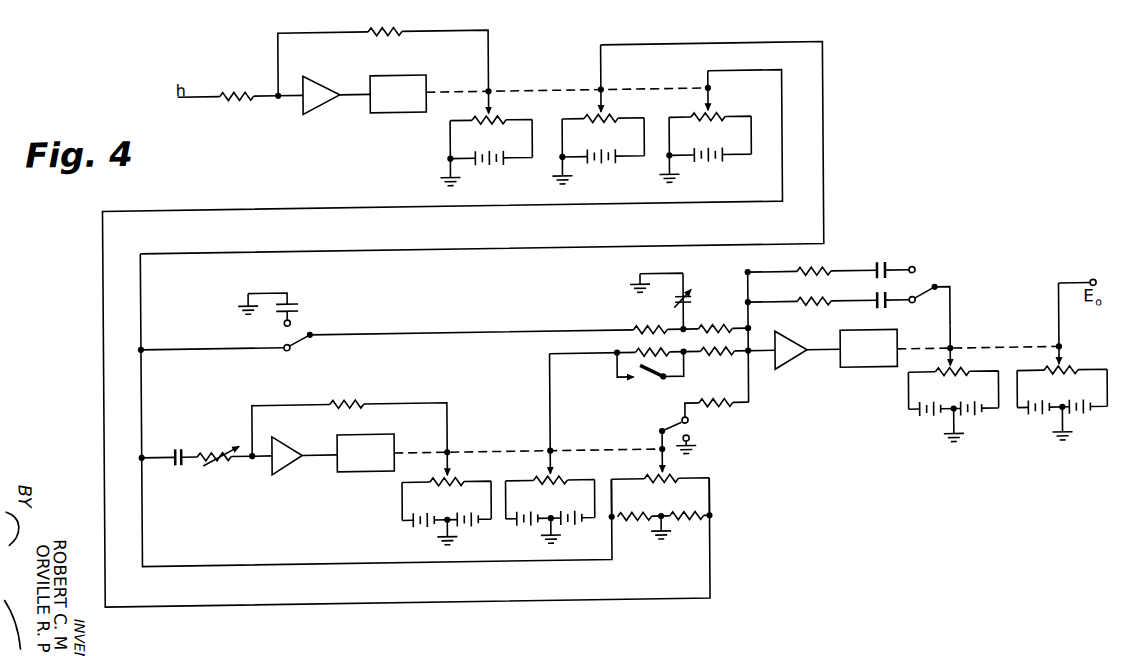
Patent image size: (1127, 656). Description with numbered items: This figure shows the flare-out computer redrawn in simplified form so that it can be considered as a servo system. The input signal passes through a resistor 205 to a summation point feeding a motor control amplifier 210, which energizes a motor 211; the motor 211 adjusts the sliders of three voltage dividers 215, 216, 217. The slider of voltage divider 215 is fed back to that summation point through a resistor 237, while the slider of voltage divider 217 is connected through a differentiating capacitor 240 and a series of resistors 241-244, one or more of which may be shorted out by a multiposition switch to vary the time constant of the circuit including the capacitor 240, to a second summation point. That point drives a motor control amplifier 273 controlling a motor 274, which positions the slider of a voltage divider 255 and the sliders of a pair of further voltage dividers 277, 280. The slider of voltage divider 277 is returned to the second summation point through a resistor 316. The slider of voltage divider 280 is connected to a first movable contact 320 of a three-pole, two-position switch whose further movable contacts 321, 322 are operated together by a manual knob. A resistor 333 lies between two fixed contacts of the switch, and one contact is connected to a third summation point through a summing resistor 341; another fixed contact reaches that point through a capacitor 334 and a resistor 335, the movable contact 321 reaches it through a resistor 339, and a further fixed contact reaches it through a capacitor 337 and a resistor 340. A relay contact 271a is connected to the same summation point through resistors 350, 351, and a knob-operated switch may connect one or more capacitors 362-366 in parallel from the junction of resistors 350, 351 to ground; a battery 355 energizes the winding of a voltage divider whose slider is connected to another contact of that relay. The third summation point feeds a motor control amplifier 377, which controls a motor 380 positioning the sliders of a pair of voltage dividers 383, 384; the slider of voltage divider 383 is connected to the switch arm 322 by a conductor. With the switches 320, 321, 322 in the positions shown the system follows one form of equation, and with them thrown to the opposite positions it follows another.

The resistor 205 is at (234, 98).
The motor control amplifier 210 is at (321, 83).
The motor 211 is at (394, 82).
The resistor 237 is at (372, 37).
The voltage divider 215 is at (471, 122).
The voltage divider 216 is at (583, 122).
The voltage divider 217 is at (690, 122).
The relay contact 271a is at (306, 343).
The battery 355 is at (291, 305).
The capacitors 362-366 is at (692, 299).
The resistor 340 is at (799, 283).
The capacitor 337 is at (874, 283).
The resistor 335 is at (797, 313).
The capacitor 334 is at (874, 313).
The movable contact 322 is at (936, 299).
The resistor 350 is at (634, 338).
The resistor 351 is at (712, 337).
The resistor 333 is at (631, 360).
The summing resistor 341 is at (703, 360).
The movable contact 320 is at (650, 383).
The motor control amplifier 377 is at (786, 381).
The motor 380 is at (849, 380).
The resistor 339 is at (723, 417).
The movable contact 321 is at (657, 439).
The voltage divider 383 is at (968, 377).
The voltage divider 384 is at (1069, 367).
The differentiating capacitor 240 is at (181, 454).
The resistors 241-244 is at (199, 465).
The resistor 316 is at (350, 409).
The motor control amplifier 273 is at (277, 441).
The motor 274 is at (344, 440).
The voltage divider 277 is at (434, 481).
The voltage divider 280 is at (537, 483).
The voltage divider 255 is at (648, 483).